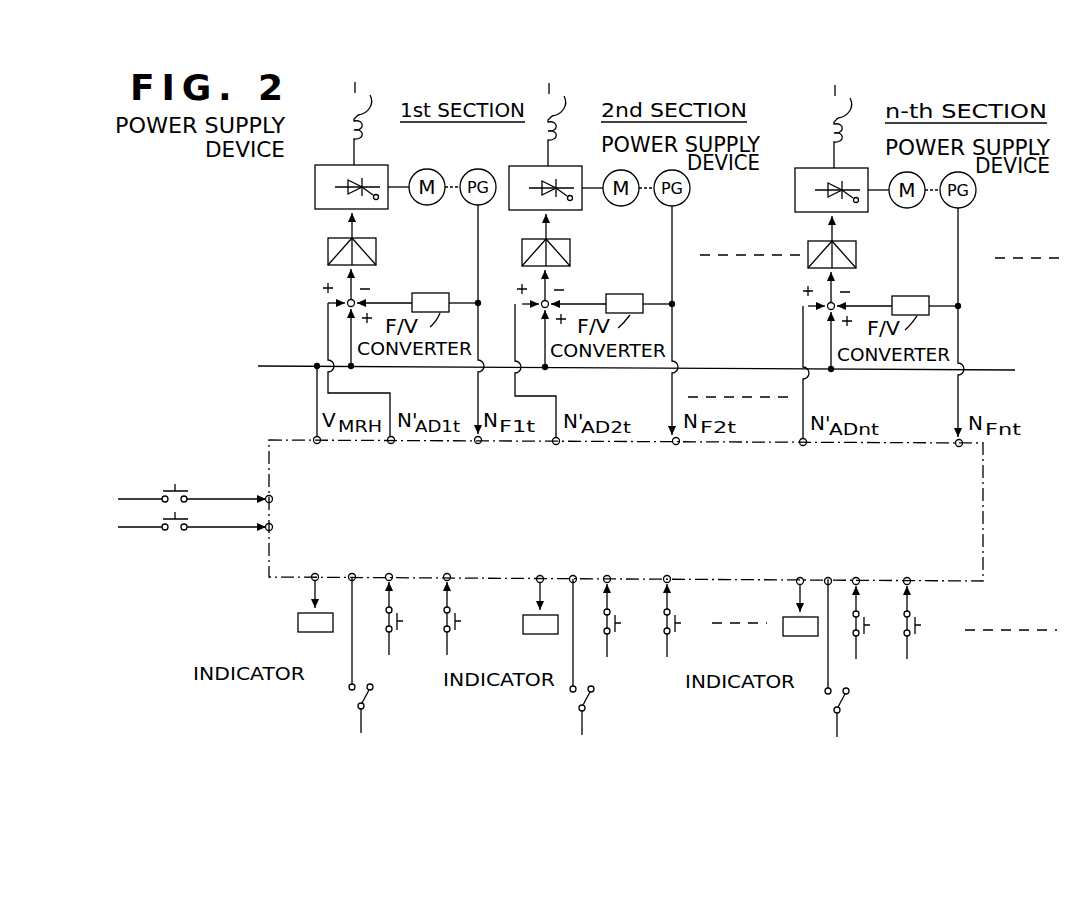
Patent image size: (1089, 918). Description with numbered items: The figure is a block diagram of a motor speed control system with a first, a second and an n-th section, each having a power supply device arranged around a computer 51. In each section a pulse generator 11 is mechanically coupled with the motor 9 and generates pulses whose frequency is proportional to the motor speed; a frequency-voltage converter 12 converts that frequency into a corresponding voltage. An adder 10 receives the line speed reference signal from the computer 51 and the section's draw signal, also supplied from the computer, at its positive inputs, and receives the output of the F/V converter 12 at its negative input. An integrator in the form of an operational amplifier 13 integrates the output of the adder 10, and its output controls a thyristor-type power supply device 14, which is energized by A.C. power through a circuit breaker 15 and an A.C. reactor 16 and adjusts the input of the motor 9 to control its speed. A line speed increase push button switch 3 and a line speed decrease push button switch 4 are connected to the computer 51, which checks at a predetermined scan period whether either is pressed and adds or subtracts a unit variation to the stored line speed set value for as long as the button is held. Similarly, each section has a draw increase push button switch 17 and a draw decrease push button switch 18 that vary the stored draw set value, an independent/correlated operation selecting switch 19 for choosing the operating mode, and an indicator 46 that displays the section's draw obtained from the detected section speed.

The line speed increase push button switch 3 is at (186, 489).
The line speed decrease push button switch 4 is at (180, 534).
The motor 9 is at (417, 200).
The adder 10 is at (347, 306).
The pulse generator 11 is at (466, 204).
The frequency-voltage converter 12 is at (432, 293).
The operational amplifier 13 is at (328, 248).
The thyristor-type power supply device 14 is at (315, 188).
The circuit breaker 15 is at (364, 101).
The A.C. reactor 16 is at (351, 130).
The draw increase push button switch 17 is at (386, 622).
The draw decrease push button switch 18 is at (444, 625).
The independent/correlated operation selecting switch 19 is at (375, 705).
The indicator 46 is at (298, 625).
The computer 51 is at (267, 545).